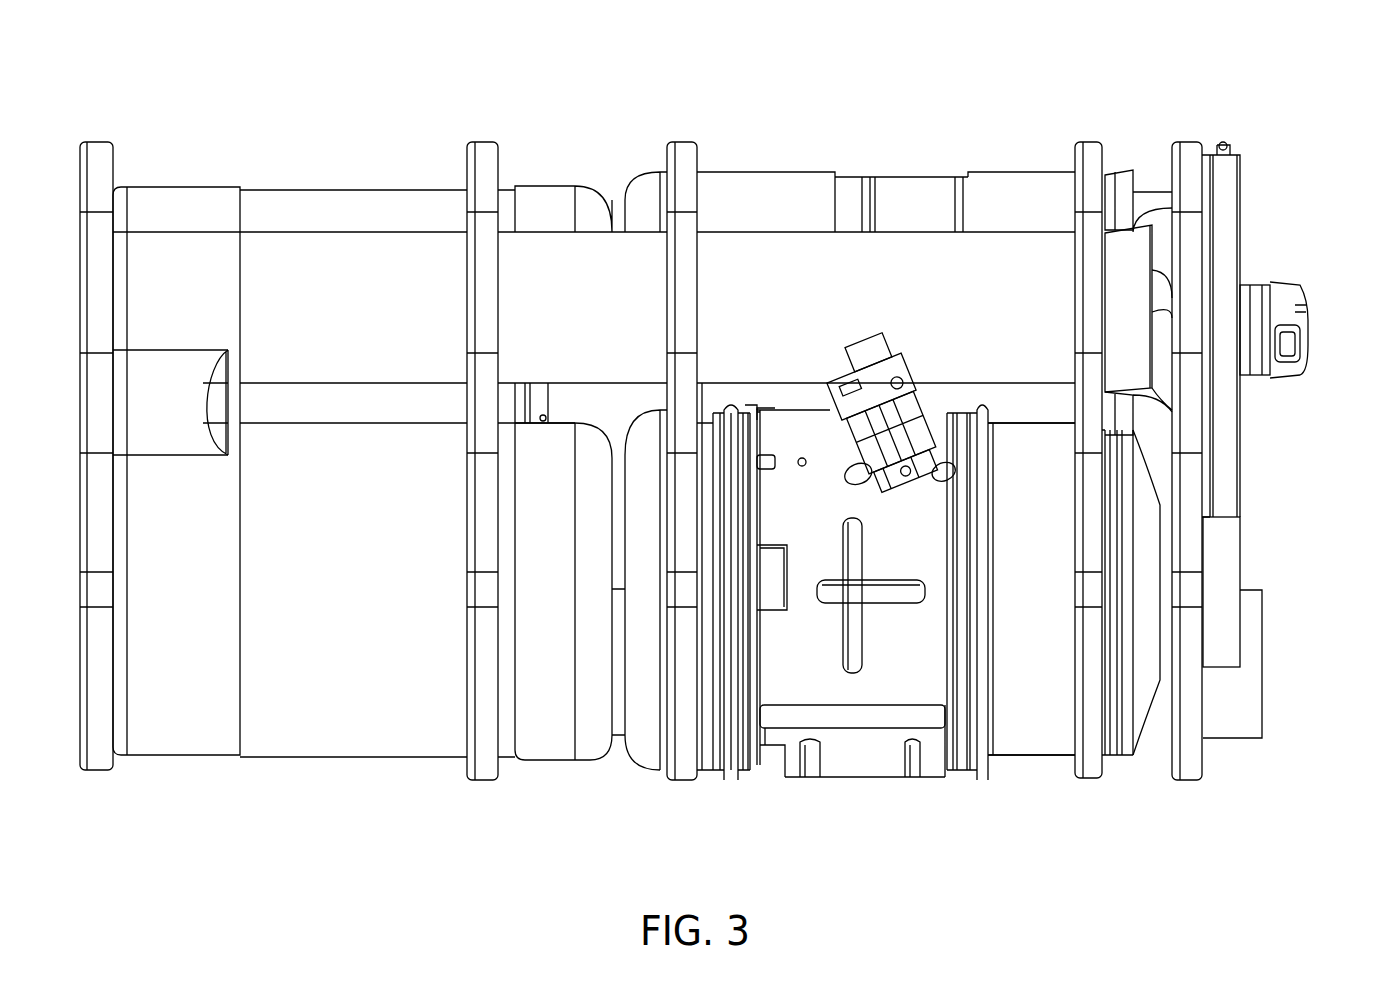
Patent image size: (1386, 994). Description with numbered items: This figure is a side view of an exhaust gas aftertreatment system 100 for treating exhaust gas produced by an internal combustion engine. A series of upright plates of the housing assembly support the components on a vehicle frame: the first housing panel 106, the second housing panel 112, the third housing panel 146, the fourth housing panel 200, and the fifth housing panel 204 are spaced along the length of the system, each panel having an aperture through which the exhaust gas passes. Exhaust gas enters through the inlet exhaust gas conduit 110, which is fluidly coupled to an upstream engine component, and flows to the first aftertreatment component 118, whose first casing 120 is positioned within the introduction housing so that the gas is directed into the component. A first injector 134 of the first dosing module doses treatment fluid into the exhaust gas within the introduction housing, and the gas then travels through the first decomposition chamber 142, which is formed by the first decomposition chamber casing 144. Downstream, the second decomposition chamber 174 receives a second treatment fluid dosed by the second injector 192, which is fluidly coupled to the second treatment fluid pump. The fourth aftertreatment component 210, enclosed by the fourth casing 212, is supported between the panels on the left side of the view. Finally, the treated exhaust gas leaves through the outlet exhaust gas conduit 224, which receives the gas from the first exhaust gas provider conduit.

The exhaust gas aftertreatment system 100 is at (628, 112).
The first housing panel 106 is at (1180, 765).
The inlet exhaust gas conduit 110 is at (1223, 598).
The second housing panel 112 is at (1085, 765).
The first aftertreatment component 118 is at (1055, 740).
The first casing 120 is at (990, 740).
The first injector 134 is at (878, 360).
The first decomposition chamber 142 is at (905, 735).
The first decomposition chamber casing 144 is at (825, 745).
The third housing panel 146 is at (678, 768).
The second decomposition chamber 174 is at (400, 258).
The second injector 192 is at (1283, 295).
The fourth housing panel 200 is at (488, 765).
The fifth housing panel 204 is at (100, 757).
The fourth aftertreatment component 210 is at (370, 727).
The fourth casing 212 is at (308, 727).
The outlet exhaust gas conduit 224 is at (1263, 608).